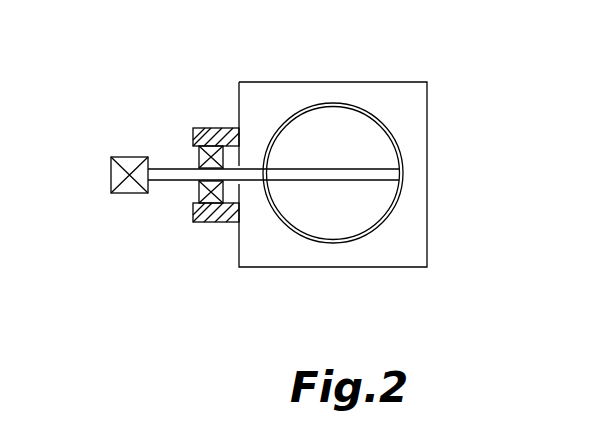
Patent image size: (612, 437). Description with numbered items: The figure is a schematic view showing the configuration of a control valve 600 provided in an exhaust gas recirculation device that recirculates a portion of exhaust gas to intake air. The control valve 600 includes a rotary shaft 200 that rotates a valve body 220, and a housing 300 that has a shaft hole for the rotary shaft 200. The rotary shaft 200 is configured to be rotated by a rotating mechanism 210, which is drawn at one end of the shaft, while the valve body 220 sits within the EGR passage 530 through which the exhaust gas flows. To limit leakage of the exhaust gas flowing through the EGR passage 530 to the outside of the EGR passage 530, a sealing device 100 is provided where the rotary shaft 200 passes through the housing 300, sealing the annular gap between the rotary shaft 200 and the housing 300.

The sealing device 100 is at (198, 222).
The rotary shaft 200 is at (172, 182).
The rotating mechanism 210 is at (110, 170).
The valve body 220 is at (322, 218).
The housing 300 is at (213, 129).
The EGR passage 530 is at (419, 222).
The control valve 600 is at (453, 79).